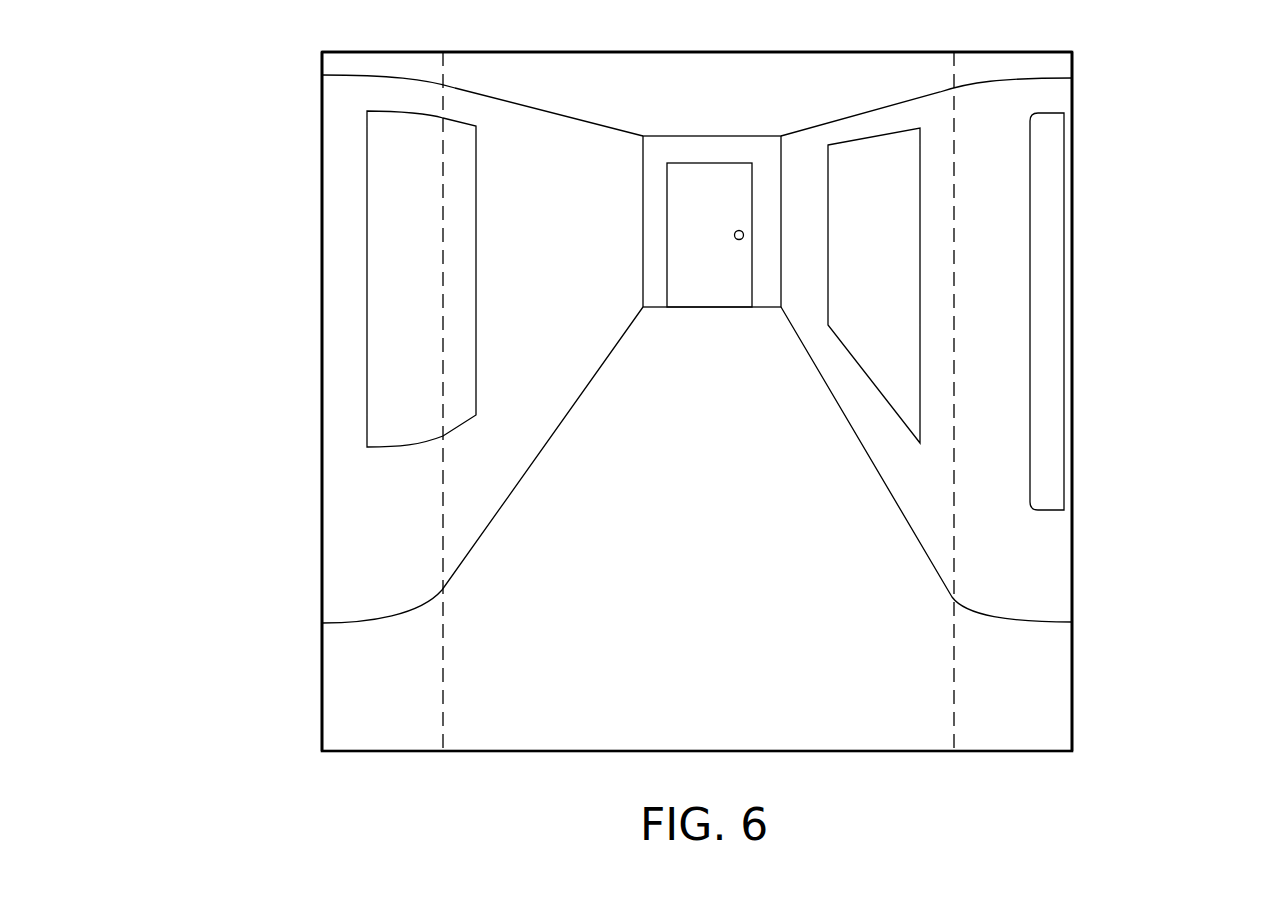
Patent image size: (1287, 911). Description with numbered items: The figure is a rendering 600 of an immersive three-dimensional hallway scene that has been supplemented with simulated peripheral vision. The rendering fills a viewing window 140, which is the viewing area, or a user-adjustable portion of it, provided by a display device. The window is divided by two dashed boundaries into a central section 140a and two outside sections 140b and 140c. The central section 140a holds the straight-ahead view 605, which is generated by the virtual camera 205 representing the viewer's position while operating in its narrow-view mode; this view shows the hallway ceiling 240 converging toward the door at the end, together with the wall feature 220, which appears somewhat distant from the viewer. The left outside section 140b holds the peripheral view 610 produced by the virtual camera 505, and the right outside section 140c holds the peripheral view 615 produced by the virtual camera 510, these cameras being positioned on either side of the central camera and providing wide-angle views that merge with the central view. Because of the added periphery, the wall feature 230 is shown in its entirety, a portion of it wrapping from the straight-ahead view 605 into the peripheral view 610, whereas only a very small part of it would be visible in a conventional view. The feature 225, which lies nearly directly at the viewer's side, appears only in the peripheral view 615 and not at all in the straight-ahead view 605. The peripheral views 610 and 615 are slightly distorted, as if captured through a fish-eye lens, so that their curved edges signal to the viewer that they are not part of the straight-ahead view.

The rendering 600 is at (1273, 56).
The straight-ahead 3D view 605 is at (878, 735).
The peripheral view 610 is at (345, 730).
The peripheral view 615 is at (1055, 735).
The viewing window 140 is at (320, 455).
The section of viewing window 140a is at (567, 52).
The outside section of viewing window 140b is at (385, 46).
The outside section of viewing window 140c is at (995, 46).
The hallway ceiling 240 is at (742, 72).
The feature 230 is at (388, 233).
The feature 220 is at (873, 160).
The feature 225 is at (1050, 448).
The virtual camera 205 is at (698, 401).
The virtual camera 505 is at (382, 687).
The virtual camera 510 is at (1013, 686).